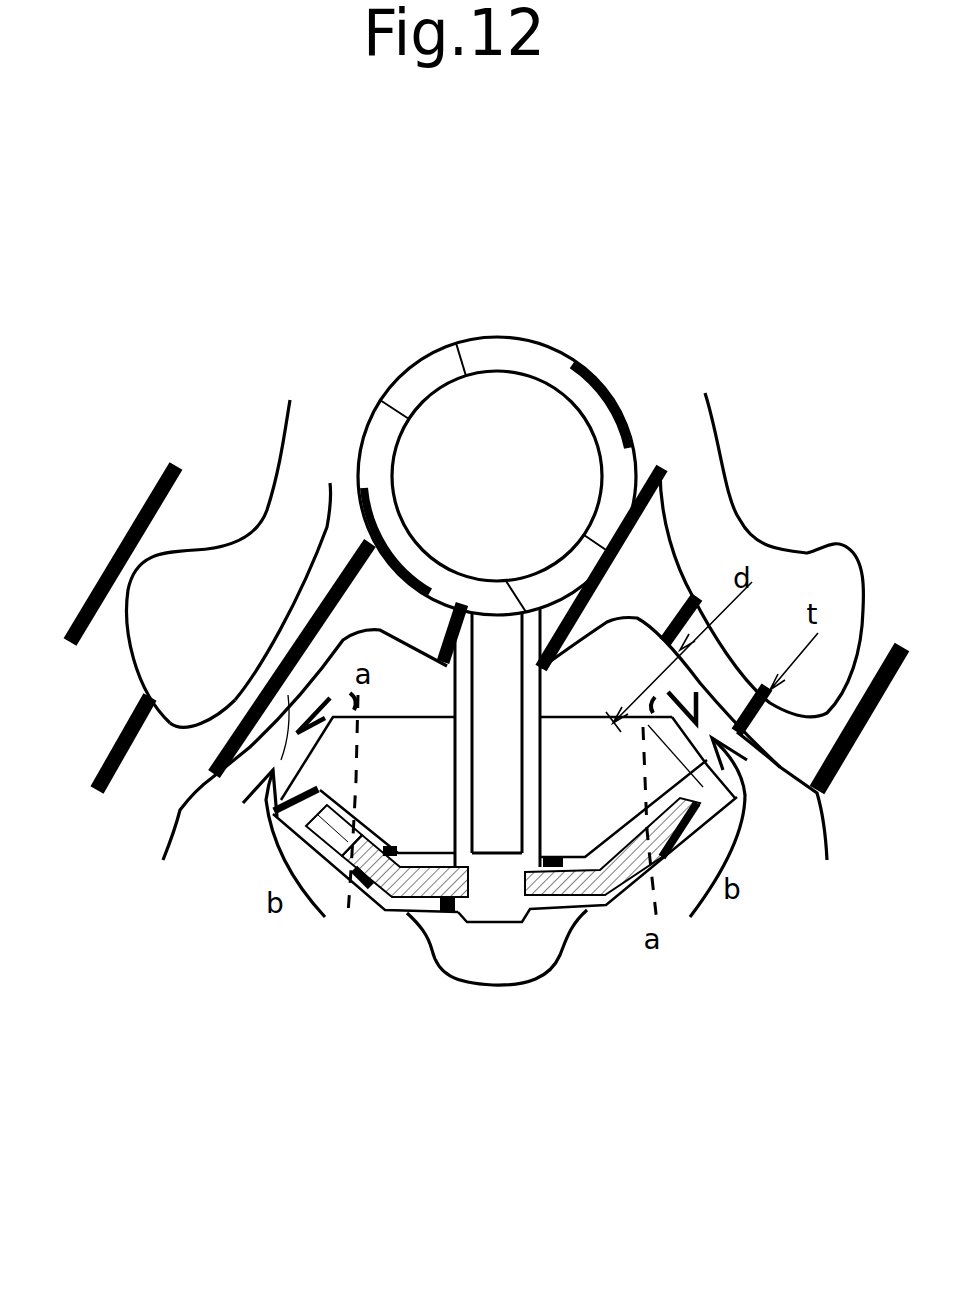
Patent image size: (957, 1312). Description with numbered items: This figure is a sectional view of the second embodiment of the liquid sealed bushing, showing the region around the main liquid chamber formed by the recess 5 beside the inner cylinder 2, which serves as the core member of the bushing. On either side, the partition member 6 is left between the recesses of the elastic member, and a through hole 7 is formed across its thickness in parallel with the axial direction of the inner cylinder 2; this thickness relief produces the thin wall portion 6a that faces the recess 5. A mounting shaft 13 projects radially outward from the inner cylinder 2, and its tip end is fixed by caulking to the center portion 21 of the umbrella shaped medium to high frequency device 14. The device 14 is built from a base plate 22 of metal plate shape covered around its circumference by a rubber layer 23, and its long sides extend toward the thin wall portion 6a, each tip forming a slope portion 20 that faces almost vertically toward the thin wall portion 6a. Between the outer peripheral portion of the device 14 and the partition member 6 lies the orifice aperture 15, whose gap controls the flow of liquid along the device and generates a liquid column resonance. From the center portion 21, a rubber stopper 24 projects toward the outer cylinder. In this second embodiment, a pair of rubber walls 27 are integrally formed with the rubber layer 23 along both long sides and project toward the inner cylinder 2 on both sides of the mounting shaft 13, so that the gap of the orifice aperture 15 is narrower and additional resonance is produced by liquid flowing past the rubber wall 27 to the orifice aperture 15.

The inner cylinder 2 is at (445, 358).
The recess 5 is at (563, 1088).
The partition member 6 is at (260, 402).
The thin wall portion 6a is at (237, 713).
The through hole 7 is at (283, 528).
The mounting shaft 13 is at (512, 710).
The medium to high frequency device 14 is at (395, 1013).
The orifice aperture 15 is at (278, 680).
The slope portion 20 is at (340, 797).
The center portion 21 is at (407, 915).
The base plate 22 is at (417, 867).
The rubber layer 23 is at (360, 817).
The rubber stopper 24 is at (526, 958).
The rubber wall 27 is at (432, 750).